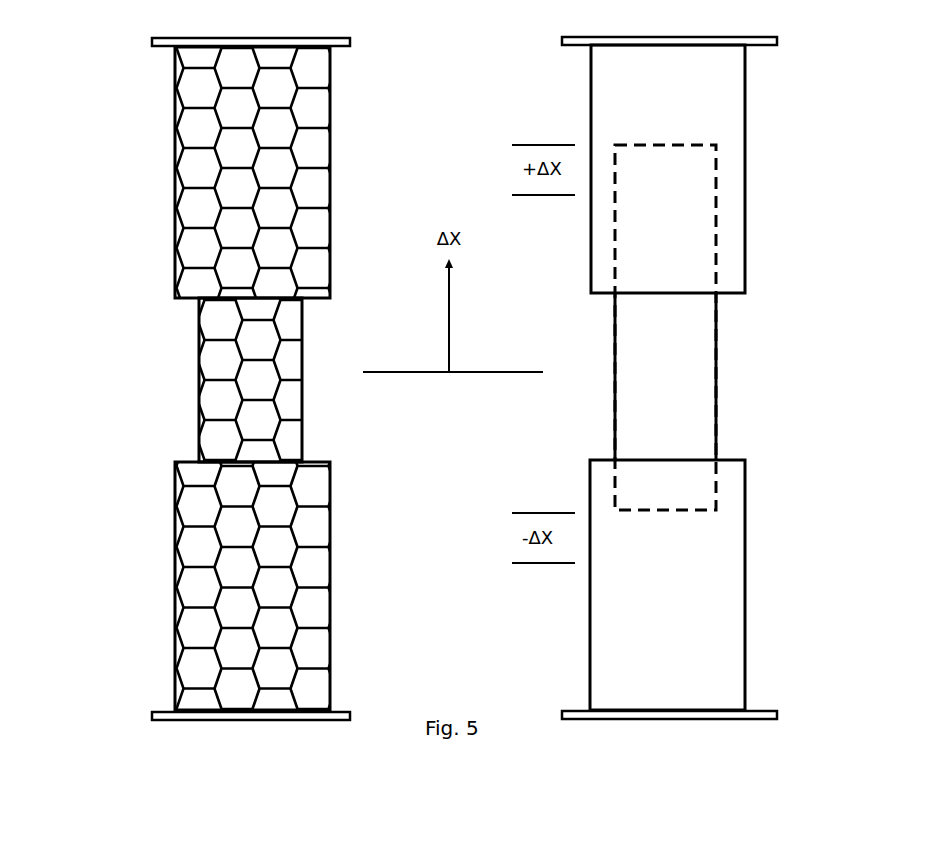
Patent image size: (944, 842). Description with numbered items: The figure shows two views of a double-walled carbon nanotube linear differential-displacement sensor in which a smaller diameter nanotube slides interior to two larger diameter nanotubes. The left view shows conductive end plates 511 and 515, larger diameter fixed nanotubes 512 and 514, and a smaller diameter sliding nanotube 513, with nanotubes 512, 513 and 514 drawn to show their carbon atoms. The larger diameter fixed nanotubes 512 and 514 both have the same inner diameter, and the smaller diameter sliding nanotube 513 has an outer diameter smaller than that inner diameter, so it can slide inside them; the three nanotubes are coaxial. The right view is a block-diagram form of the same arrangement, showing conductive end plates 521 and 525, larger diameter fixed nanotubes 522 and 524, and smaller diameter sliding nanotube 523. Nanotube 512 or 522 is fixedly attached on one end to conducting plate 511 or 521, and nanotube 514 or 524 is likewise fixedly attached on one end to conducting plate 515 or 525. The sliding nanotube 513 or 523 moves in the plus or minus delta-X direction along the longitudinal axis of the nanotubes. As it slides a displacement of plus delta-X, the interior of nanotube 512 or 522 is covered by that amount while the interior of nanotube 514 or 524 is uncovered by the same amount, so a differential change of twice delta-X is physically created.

The conductive end plate 511 is at (152, 45).
The larger diameter fixed nanotube 512 is at (170, 130).
The smaller diameter sliding nanotube 513 is at (216, 350).
The larger diameter fixed nanotube 514 is at (172, 550).
The conductive end plate 515 is at (152, 710).
The conductive end plate 521 is at (777, 43).
The larger diameter fixed nanotube 522 is at (745, 159).
The smaller diameter sliding nanotube 523 is at (716, 358).
The larger diameter fixed nanotube 524 is at (747, 597).
The conductive end plate 525 is at (777, 712).